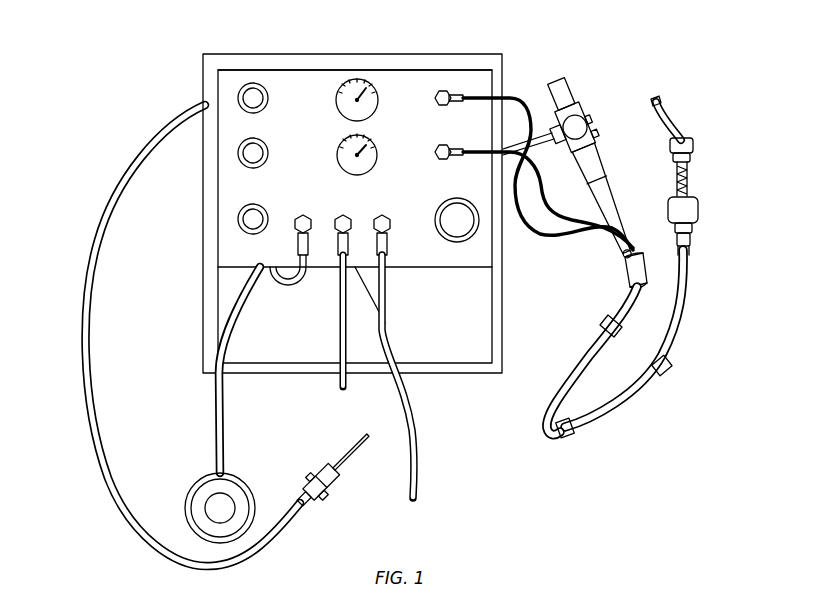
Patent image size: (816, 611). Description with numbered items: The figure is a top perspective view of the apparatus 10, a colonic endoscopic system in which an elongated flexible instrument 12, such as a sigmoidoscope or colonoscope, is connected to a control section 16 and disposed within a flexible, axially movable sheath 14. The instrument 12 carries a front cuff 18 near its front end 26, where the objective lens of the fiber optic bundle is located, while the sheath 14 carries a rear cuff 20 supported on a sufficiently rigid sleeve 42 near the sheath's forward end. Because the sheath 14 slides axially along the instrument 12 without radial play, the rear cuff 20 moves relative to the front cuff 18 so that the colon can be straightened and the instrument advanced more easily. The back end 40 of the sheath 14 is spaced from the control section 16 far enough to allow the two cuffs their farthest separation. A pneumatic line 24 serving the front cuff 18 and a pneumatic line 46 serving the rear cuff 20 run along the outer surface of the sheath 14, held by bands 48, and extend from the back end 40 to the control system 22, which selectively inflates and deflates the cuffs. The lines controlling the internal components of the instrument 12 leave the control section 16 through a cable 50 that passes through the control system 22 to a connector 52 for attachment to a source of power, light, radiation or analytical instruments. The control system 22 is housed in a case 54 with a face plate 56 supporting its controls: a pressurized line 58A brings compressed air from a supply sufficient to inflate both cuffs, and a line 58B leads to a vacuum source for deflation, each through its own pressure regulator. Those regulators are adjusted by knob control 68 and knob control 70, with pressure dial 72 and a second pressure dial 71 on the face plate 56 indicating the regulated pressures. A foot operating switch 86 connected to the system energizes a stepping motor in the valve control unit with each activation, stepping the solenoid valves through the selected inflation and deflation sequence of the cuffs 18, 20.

The apparatus 10 is at (170, 101).
The instrument 12 is at (675, 118).
The sheath 14 is at (684, 282).
The control section 16 is at (586, 104).
The front cuff 18 is at (694, 148).
The rear cuff 20 is at (690, 212).
The control system 22 is at (198, 280).
The pneumatic line 24 is at (544, 203).
The front end 26 is at (653, 97).
The back end 40 is at (626, 275).
The sleeve 42 is at (691, 236).
The pneumatic line 46 is at (525, 105).
The bands 48 is at (635, 352).
The cable 50 is at (96, 247).
The connector 52 is at (320, 492).
The case 54 is at (368, 53).
The face plate 56 is at (287, 77).
The pressurized line 58A is at (340, 385).
The line 58B is at (381, 388).
The knob control 68 is at (259, 97).
The knob control 70 is at (264, 152).
The gauge 71 is at (373, 154).
The pressure dial 72 is at (370, 85).
The foot operating switch 86 is at (231, 478).